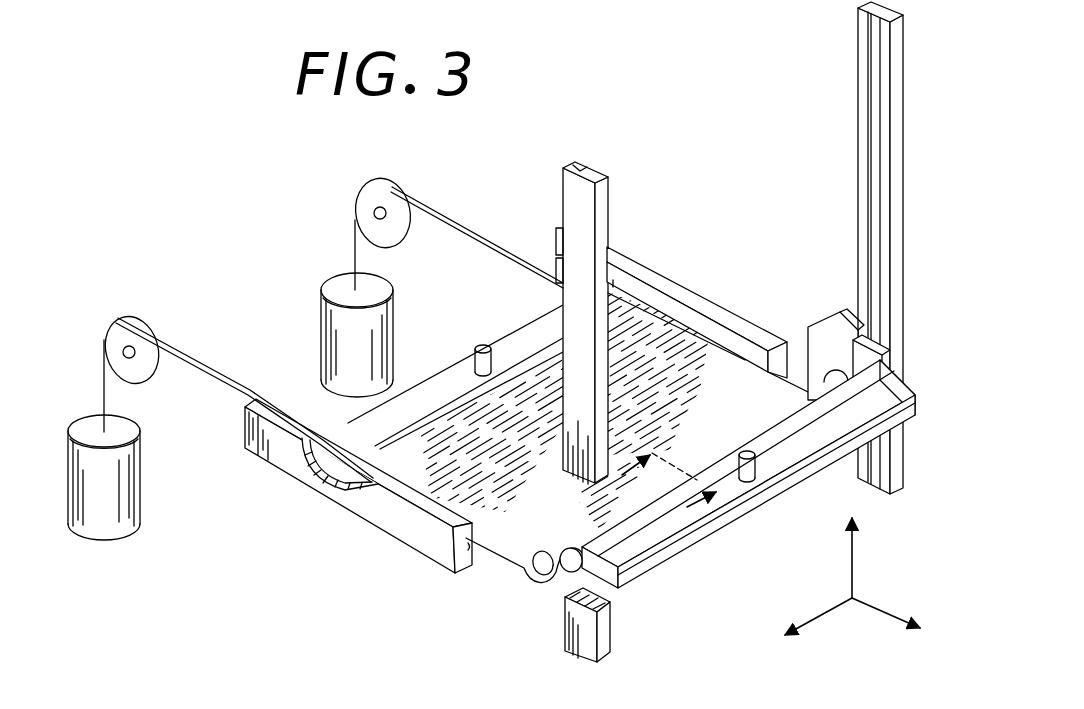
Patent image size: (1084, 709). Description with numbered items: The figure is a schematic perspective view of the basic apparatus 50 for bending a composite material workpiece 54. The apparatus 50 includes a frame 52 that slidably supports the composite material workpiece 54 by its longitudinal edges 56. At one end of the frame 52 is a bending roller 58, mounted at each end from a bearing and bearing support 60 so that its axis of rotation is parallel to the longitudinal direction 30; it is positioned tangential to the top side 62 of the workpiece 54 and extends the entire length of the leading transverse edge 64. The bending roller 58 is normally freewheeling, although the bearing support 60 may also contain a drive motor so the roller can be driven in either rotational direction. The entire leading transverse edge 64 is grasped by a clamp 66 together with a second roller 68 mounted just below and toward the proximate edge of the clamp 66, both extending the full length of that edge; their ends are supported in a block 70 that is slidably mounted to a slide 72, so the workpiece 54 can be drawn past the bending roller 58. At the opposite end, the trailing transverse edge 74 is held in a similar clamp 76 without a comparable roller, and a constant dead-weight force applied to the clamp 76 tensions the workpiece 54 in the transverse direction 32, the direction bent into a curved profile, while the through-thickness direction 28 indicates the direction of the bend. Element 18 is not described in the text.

The apparatus 50 is at (243, 182).
The weight 18 is at (118, 514).
The through-thickness direction 28 is at (880, 558).
The longitudinal direction 30 is at (822, 623).
The transverse direction 32 is at (886, 601).
The frame 52 is at (668, 272).
The composite material workpiece 54 is at (463, 495).
The longitudinal edges 56 is at (710, 342).
The bending roller 58 is at (557, 547).
The bearing and bearing support 60 is at (835, 318).
The top side 62 is at (624, 408).
The leading transverse edge 64 is at (748, 487).
The clamp 66 is at (638, 571).
The second roller 68 is at (569, 578).
The block 70 is at (878, 358).
The slide 72 is at (900, 238).
The trailing transverse edge 74 is at (608, 192).
The clamp 76 is at (363, 430).